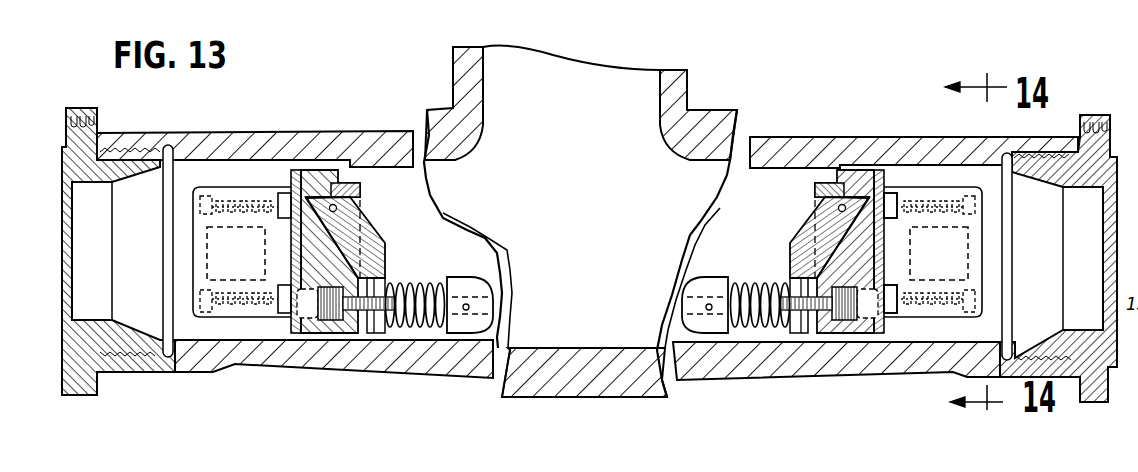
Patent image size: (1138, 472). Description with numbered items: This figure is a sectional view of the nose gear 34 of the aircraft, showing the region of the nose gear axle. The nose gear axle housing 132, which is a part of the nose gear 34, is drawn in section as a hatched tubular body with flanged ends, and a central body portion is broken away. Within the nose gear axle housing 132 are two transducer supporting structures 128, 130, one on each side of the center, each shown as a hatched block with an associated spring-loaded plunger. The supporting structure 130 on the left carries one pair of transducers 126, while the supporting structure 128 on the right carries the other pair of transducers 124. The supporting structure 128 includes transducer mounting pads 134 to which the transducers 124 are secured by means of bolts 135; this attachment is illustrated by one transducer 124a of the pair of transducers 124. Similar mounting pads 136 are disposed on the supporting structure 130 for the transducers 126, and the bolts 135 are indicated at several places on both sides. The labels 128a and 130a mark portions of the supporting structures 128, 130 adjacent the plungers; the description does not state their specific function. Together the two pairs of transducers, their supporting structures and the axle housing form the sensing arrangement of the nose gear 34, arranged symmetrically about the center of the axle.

The nose gear 34 is at (788, 126).
The transducers 124 is at (930, 193).
The transducer 124a is at (925, 197).
The transducers 126 is at (236, 194).
The transducer supporting structure 128 is at (817, 197).
The right detent cam wedge 128a is at (813, 220).
The transducer supporting structure 130 is at (362, 198).
The left detent cam wedge 130a is at (385, 230).
The nose gear axle housing 132 is at (387, 137).
The transducer mounting pads 134 is at (910, 205).
The bolts 135 is at (1024, 207).
The mounting pads 136 is at (282, 200).